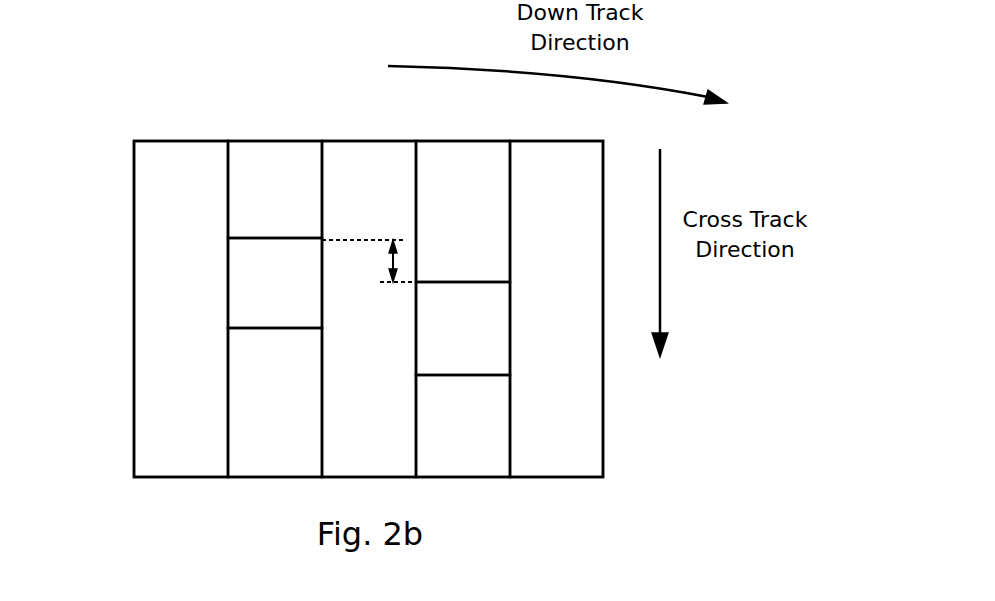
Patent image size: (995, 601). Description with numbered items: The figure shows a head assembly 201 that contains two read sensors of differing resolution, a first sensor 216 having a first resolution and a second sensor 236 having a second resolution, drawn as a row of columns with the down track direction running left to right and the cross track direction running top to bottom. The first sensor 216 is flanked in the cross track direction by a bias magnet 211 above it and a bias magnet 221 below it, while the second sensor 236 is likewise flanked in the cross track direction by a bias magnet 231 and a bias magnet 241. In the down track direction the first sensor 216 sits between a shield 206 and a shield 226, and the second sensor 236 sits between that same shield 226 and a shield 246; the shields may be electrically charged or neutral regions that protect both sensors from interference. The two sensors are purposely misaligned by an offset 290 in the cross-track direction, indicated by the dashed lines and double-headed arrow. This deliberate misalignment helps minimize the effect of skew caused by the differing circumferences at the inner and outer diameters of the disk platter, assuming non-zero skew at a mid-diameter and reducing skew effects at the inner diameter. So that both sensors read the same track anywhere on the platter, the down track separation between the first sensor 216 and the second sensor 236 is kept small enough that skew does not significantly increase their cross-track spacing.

The head assembly 201 is at (57, 213).
The shield 206 is at (160, 336).
The bias magnet 211 is at (254, 231).
The first sensor 216 is at (254, 324).
The bias magnet 221 is at (254, 444).
The shield 226 is at (348, 381).
The bias magnet 231 is at (442, 252).
The second sensor 236 is at (442, 369).
The bias magnet 241 is at (442, 467).
The shield 246 is at (535, 336).
The offset 290 is at (390, 259).